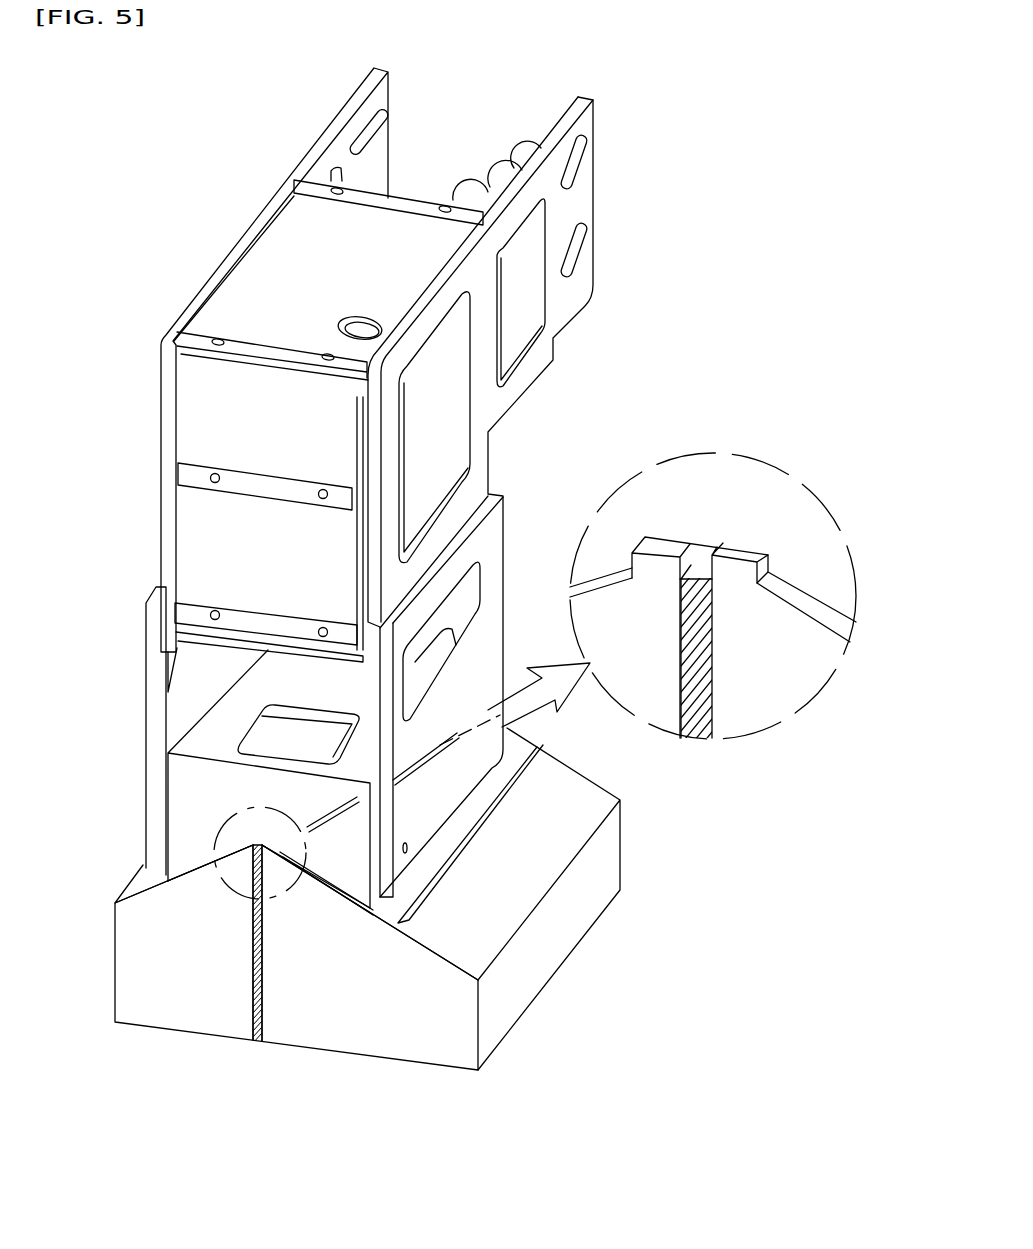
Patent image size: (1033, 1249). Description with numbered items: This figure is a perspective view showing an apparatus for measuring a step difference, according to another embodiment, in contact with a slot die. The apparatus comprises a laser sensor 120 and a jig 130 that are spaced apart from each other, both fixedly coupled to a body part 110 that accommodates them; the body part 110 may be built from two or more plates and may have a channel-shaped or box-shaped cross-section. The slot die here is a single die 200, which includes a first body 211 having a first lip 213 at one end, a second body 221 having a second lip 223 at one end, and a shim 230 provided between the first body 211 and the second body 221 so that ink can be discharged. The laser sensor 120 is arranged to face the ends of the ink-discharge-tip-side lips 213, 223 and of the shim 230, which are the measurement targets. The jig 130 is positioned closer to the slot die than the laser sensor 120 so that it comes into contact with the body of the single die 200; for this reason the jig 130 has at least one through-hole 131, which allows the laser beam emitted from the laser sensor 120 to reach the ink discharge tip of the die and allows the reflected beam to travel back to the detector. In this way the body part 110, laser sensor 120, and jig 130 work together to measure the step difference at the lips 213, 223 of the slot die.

The body part 110 is at (547, 340).
The laser sensor 120 is at (203, 522).
The jig 130 is at (195, 810).
The through-hole 131 is at (297, 735).
The single die 200 is at (515, 883).
The first body 211 is at (162, 1003).
The first lip 213 is at (658, 550).
The second body 221 is at (368, 1022).
The second lip 223 is at (745, 552).
The shim 230 is at (255, 1000).